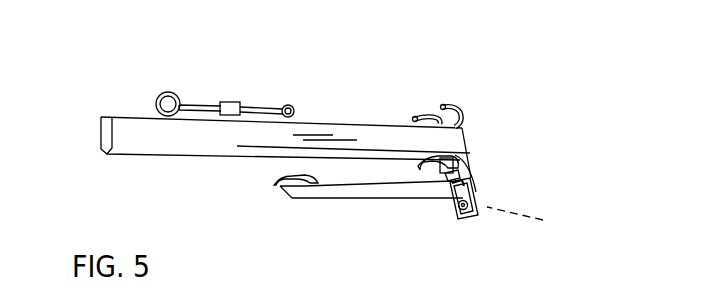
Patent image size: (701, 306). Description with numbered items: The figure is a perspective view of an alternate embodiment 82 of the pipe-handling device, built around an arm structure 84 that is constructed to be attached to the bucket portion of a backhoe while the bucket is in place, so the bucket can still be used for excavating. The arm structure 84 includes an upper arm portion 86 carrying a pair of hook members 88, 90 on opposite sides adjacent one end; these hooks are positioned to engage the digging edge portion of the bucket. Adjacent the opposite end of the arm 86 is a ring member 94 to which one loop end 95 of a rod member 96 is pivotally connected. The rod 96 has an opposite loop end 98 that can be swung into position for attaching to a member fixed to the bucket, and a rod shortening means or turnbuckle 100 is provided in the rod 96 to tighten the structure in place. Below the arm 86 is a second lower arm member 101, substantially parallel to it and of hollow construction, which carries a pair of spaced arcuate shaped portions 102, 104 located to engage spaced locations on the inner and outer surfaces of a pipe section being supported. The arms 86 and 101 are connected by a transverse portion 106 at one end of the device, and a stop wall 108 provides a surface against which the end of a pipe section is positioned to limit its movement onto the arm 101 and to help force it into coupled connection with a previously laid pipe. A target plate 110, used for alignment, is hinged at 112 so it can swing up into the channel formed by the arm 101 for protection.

The alternate embodiment 82 is at (472, 130).
The arm structure 84 is at (468, 160).
The arm portion 86 is at (320, 122).
The hook member 88 is at (415, 115).
The hook member 90 is at (458, 105).
The ring member 94 is at (173, 92).
The loop end 95 is at (195, 103).
The rod member 96 is at (249, 106).
The loop end 98 is at (297, 109).
The turnbuckle 100 is at (233, 102).
The lower arm member 101 is at (325, 203).
The arcuate shaped portion 102 is at (290, 180).
The arcuate shaped portion 104 is at (470, 186).
The transverse portion 106 is at (472, 166).
The stop wall 108 is at (448, 174).
The target plate 110 is at (462, 218).
The hinge 112 is at (537, 221).